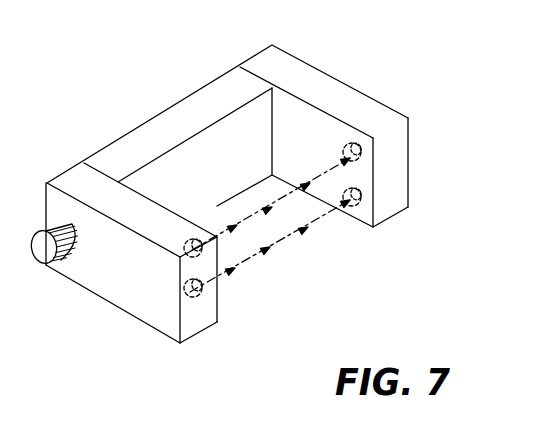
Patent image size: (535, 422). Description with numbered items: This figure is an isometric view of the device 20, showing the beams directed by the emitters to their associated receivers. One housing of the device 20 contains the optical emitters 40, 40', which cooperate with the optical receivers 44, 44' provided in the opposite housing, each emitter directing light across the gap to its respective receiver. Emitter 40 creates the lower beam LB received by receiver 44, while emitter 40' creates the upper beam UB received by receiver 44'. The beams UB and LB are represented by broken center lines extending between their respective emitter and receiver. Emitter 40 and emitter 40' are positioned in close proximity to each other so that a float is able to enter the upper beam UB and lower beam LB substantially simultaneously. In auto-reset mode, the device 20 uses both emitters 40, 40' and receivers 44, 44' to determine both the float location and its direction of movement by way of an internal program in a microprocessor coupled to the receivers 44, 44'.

The device 20 is at (353, 72).
The optical emitter 40 is at (208, 350).
The optical emitter 40' is at (152, 320).
The optical receiver 44 is at (374, 239).
The optical receiver 44' is at (405, 188).
The upper beam UB is at (248, 215).
The lower beam LB is at (288, 243).